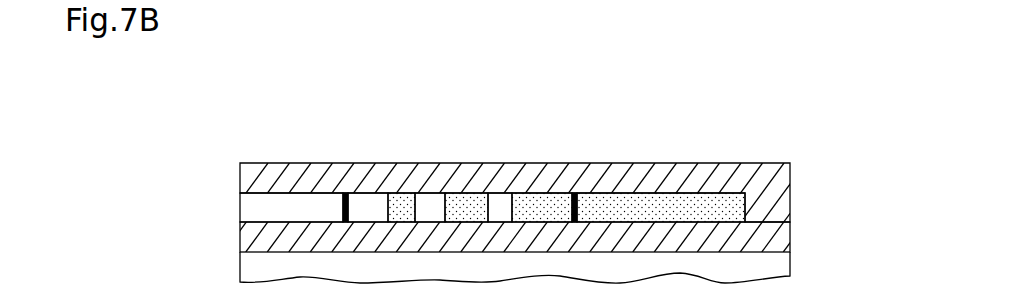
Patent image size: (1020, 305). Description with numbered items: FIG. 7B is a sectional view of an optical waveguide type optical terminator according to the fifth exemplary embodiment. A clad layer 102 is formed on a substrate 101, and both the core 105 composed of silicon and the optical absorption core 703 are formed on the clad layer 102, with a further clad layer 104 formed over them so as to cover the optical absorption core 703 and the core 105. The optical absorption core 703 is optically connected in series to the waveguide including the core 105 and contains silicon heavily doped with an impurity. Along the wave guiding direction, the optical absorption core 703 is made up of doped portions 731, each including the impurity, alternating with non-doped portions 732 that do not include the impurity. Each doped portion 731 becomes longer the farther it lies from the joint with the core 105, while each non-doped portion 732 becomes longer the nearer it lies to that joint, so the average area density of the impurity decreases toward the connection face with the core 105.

The substrate 101 is at (790, 262).
The clad layer 102 is at (790, 233).
The clad layer 104 is at (790, 200).
The core 105 is at (292, 201).
The optical absorption core 703 is at (748, 93).
The doped portion 731 is at (345, 193).
The non-doped portion 732 is at (372, 193).